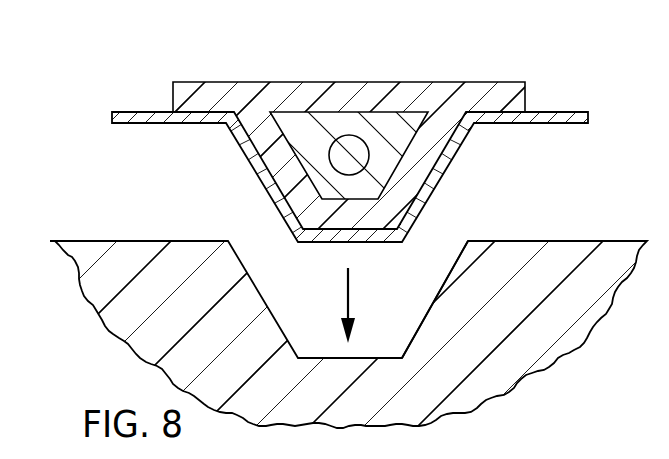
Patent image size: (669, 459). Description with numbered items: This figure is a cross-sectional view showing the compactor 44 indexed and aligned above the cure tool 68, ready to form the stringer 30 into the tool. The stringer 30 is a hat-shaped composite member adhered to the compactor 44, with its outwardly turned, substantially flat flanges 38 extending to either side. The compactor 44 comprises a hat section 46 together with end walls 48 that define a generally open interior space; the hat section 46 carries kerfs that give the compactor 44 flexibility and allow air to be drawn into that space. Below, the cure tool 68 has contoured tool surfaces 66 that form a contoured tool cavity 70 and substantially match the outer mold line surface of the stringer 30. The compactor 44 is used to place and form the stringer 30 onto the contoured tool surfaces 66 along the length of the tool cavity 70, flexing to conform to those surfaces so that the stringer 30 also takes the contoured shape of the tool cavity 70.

The stringer 30 is at (80, 98).
The flanges 38 is at (147, 120).
The compactor 44 is at (497, 90).
The hat section 46 is at (273, 148).
The end walls 48 is at (336, 124).
The contoured tool surfaces 66 is at (453, 249).
The cure tool 68 is at (90, 248).
The tool cavity 70 is at (266, 250).